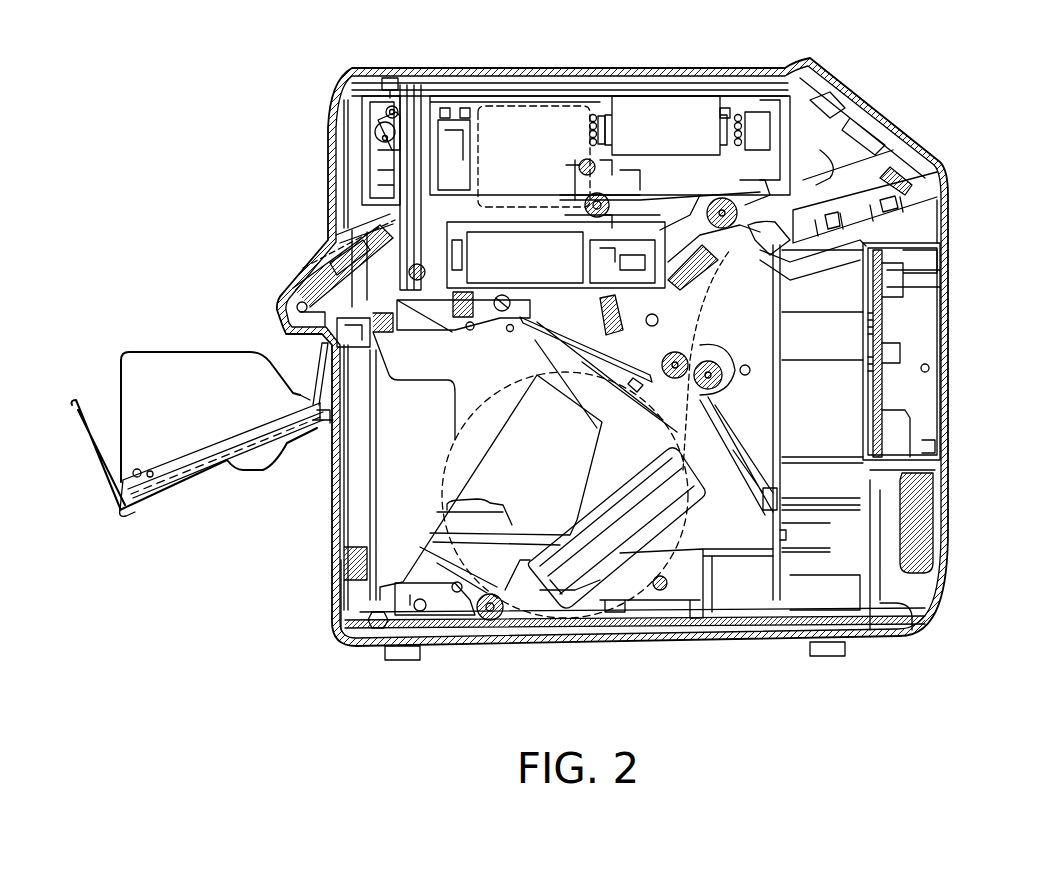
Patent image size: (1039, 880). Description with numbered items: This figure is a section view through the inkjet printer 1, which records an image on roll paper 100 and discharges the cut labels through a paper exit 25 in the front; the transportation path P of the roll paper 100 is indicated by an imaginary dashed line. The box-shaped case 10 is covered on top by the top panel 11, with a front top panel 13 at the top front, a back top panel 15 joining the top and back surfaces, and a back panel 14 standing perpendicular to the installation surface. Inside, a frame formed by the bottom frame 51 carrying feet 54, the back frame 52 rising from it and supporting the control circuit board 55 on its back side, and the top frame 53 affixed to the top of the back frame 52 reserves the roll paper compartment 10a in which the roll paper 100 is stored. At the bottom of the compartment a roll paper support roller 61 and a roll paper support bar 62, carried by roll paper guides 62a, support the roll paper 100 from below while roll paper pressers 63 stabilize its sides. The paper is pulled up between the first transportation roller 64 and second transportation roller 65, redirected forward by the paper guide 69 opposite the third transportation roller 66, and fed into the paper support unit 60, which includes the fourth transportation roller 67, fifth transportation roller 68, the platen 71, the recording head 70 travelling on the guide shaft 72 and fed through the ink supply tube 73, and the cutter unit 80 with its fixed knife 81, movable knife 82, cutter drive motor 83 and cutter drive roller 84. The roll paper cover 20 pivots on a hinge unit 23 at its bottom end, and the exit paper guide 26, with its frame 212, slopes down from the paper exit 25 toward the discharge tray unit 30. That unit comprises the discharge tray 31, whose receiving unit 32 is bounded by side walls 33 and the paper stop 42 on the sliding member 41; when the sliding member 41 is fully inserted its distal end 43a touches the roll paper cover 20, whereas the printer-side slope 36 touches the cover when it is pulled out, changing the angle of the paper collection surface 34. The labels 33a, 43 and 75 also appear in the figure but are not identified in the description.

The inkjet printer 1 is at (214, 78).
The case 10 is at (786, 64).
The roll paper compartment 10a is at (391, 476).
The top panel 11 is at (452, 68).
The front top panel 13 is at (333, 150).
The back panel 14 is at (948, 437).
The back top panel 15 is at (884, 112).
The roll paper cover 20 is at (333, 583).
The hinge unit 23 is at (374, 630).
The paper exit 25 is at (320, 231).
The exit paper guide 26 is at (292, 310).
The discharge tray unit 30 is at (126, 352).
The discharge tray 31 is at (147, 470).
The receiving unit 32 is at (102, 390).
The side walls 33 is at (176, 362).
The cover edge portion 33a is at (246, 472).
The paper collection surface 34 is at (135, 510).
The printer-side slope 36 is at (316, 360).
The sliding member 41 is at (118, 508).
The paper stop 42 is at (76, 400).
The sheet tray 43 is at (175, 493).
The distal end 43a is at (323, 422).
The bottom frame 51 is at (738, 640).
The back frame 52 is at (780, 497).
The top frame 53 is at (482, 100).
The feet 54 is at (403, 660).
The control circuit board 55 is at (897, 320).
The paper support unit 60 is at (553, 302).
The roll paper support roller 61 is at (478, 620).
The roll paper support bar 62 is at (658, 602).
The roll paper guides 62a is at (685, 592).
The roll paper pressers 63 is at (572, 582).
The first transportation roller 64 is at (760, 410).
The second transportation roller 65 is at (716, 365).
The third transportation roller 66 is at (722, 197).
The fourth transportation roller 67 is at (607, 128).
The fifth transportation roller 68 is at (577, 230).
The paper guide 69 is at (742, 252).
The recording head 70 is at (530, 106).
The platen 71 is at (490, 228).
The guide shaft 72 is at (588, 158).
The ink supply tube 73 is at (735, 110).
The discharge guide 75 is at (830, 246).
The cutter unit 80 is at (345, 70).
The fixed knife 81 is at (397, 298).
The movable knife 82 is at (375, 128).
The cutter drive motor 83 is at (393, 70).
The cutter drive roller 84 is at (384, 112).
The roll paper 100 is at (440, 525).
The frame 212 is at (370, 336).
The transportation path P is at (303, 268).